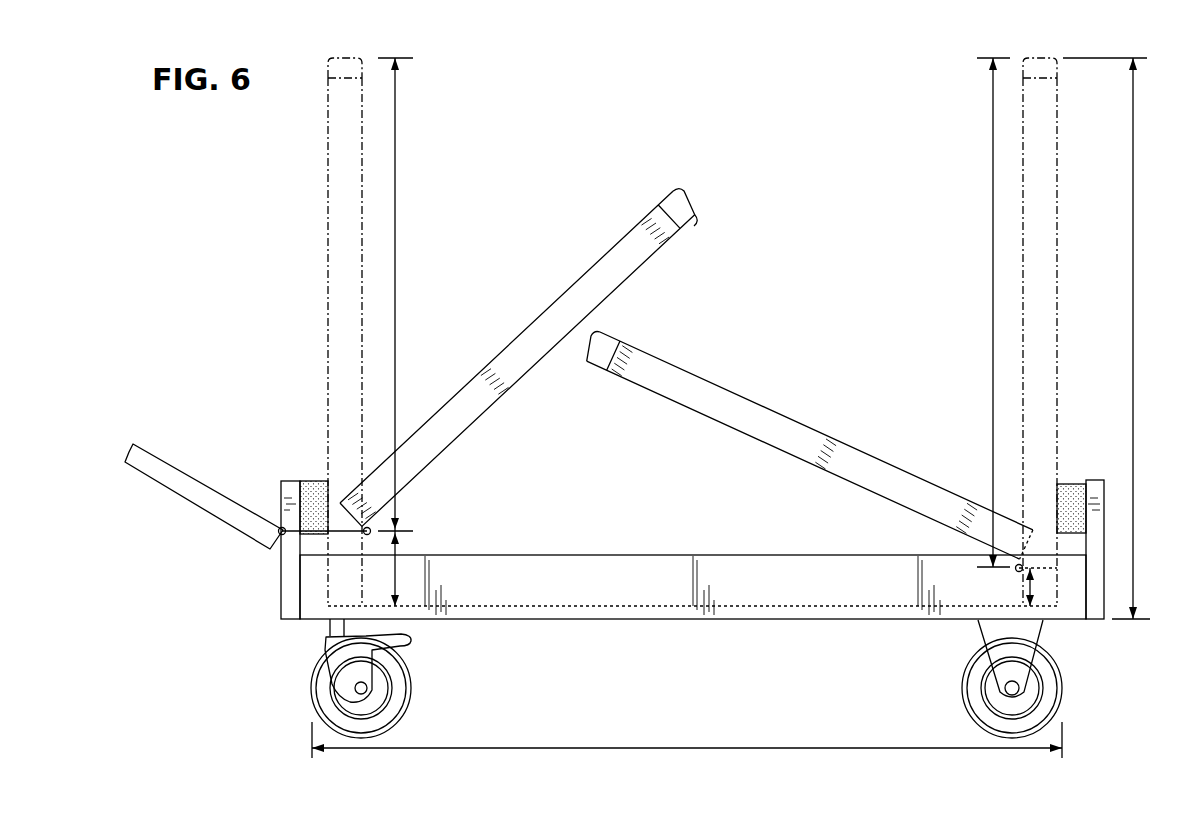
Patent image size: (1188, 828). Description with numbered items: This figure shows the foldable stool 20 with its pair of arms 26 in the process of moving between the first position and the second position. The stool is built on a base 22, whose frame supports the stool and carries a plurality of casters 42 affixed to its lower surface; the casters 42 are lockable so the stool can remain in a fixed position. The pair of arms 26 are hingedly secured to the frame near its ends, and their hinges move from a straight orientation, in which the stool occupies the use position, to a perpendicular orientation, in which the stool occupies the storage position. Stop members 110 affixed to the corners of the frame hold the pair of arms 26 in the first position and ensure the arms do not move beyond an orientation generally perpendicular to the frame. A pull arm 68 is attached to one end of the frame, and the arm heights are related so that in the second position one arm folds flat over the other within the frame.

The foldable stool 20 is at (761, 148).
The base 22 is at (792, 628).
The pair of arms 26 is at (560, 262).
The plurality of casters 42 is at (409, 665).
The pull arm 68 is at (147, 478).
The stop members 110 is at (282, 492).